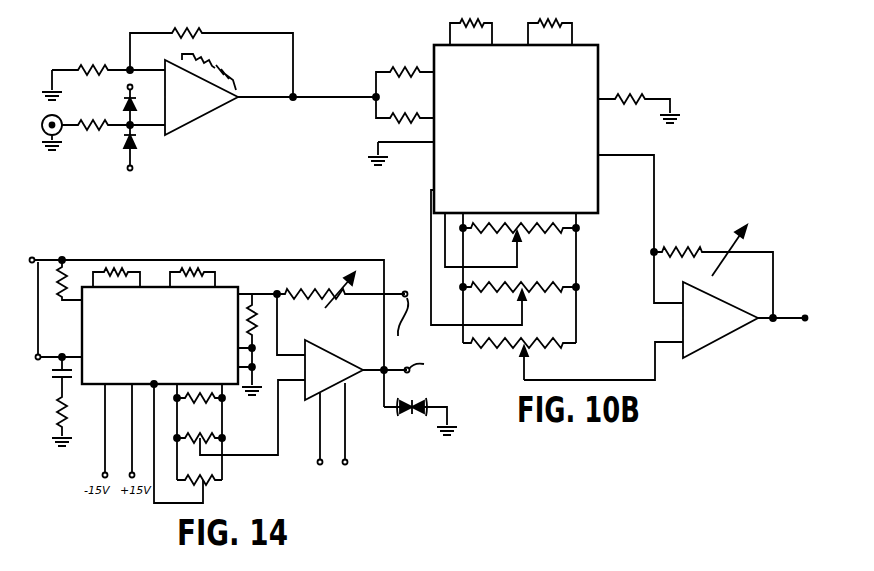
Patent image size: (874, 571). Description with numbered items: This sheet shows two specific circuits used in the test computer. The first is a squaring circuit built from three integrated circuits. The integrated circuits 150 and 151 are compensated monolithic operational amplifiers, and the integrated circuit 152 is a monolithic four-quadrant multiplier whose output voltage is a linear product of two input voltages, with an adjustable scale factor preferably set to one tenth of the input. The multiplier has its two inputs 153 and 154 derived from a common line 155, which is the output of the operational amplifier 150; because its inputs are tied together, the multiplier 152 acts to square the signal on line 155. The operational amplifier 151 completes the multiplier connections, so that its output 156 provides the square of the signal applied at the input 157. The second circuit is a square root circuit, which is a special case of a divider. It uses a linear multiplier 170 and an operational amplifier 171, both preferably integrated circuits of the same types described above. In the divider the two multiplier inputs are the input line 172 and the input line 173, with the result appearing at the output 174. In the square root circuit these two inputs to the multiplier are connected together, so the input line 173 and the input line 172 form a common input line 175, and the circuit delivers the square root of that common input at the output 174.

In FIG. 10B, the operational amplifier 150 is at (205, 116).
In FIG. 10B, the operational amplifier 151 is at (722, 336).
In FIG. 10B, the multiplier 152 is at (600, 73).
In FIG. 10B, the multiplier input 153 is at (401, 68).
In FIG. 10B, the multiplier input 154 is at (393, 118).
In FIG. 10B, the common line 155 is at (300, 104).
In FIG. 10B, the output 156 is at (790, 318).
In FIG. 10B, the input 157 is at (63, 132).
In FIG. 14, the linear multiplier 170 is at (84, 386).
In FIG. 14, the operational amplifier 171 is at (333, 350).
In FIG. 14, the input line 172 is at (386, 292).
In FIG. 14, the input line 173 is at (36, 455).
In FIG. 14, the output 174 is at (387, 373).
In FIG. 14, the common input line 175 is at (33, 259).